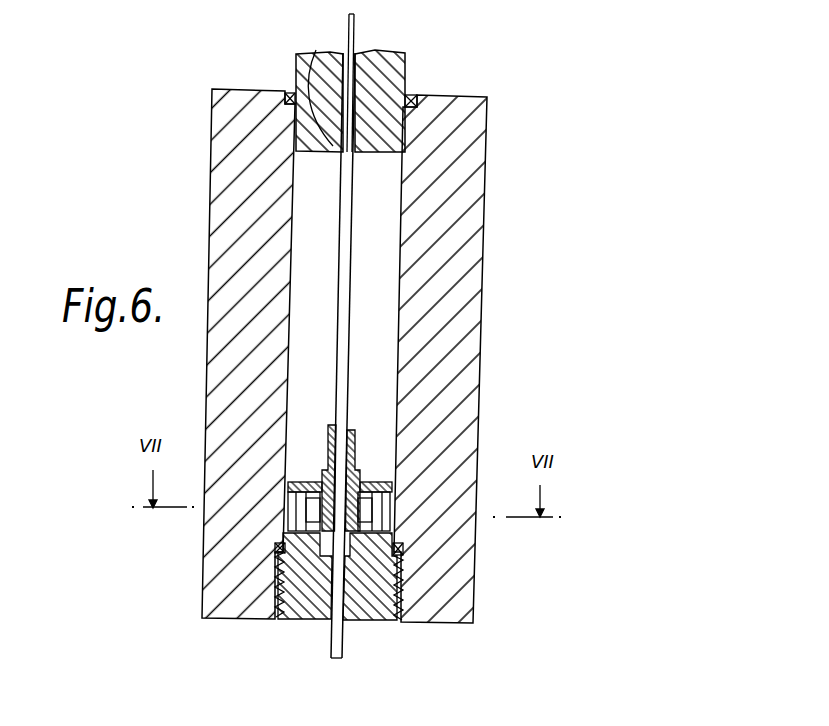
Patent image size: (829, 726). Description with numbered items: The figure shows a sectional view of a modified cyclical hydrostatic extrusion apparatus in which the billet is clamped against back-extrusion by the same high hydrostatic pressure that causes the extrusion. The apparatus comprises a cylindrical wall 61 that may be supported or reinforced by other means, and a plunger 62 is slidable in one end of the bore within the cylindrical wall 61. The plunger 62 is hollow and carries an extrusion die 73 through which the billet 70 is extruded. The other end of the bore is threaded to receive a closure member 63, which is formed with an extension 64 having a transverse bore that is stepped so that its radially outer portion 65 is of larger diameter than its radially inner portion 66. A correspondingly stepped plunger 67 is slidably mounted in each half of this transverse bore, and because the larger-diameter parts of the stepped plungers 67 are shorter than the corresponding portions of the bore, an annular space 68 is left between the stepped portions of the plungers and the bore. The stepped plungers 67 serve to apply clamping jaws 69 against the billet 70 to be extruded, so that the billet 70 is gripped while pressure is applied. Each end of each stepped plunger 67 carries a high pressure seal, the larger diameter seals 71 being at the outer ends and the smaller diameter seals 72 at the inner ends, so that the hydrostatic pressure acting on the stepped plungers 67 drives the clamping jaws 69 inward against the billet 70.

The cylindrical wall 61 is at (458, 298).
The plunger 62 is at (393, 75).
The closure member 63 is at (376, 608).
The extension 64 is at (380, 481).
The radially outer portion 65 is at (391, 523).
The radially inner portion 66 is at (320, 481).
The stepped plunger 67 is at (309, 525).
The annular space 68 is at (397, 577).
The clamping jaws 69 is at (329, 425).
The billet 70 is at (342, 321).
The larger diameter seals 71 is at (316, 494).
The smaller diameter seals 72 is at (319, 527).
The extrusion die 73 is at (318, 85).